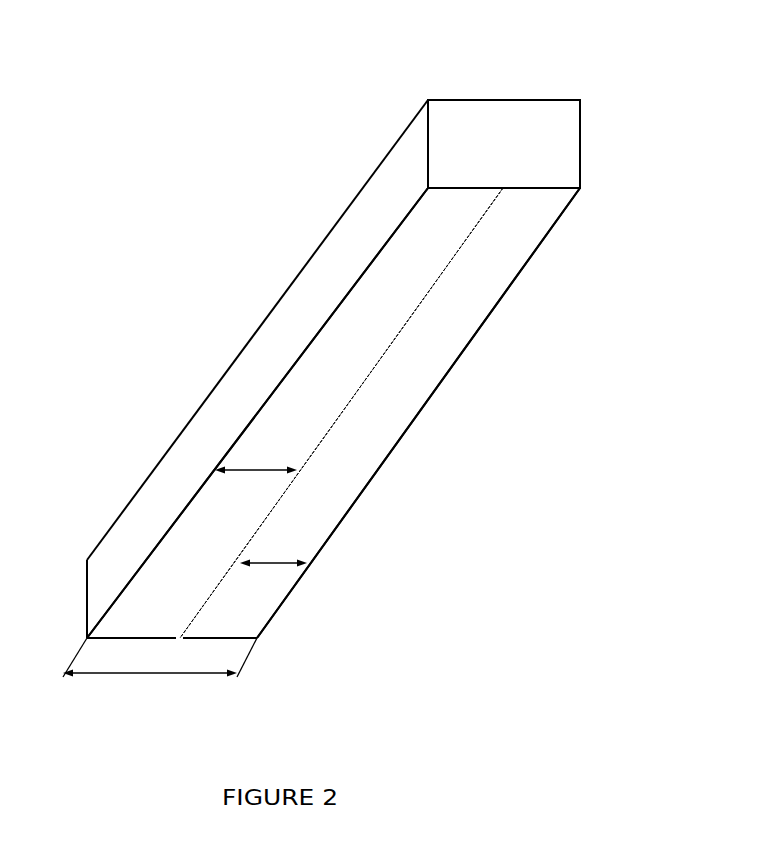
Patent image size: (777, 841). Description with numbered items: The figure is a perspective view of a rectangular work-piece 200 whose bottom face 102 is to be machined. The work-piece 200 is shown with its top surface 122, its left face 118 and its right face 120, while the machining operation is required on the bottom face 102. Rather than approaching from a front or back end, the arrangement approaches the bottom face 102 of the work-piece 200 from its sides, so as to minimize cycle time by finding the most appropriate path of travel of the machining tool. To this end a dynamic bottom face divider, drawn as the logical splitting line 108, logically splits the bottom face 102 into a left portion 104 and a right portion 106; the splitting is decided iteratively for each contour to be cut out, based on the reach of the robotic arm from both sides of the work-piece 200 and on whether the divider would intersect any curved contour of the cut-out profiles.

The rectangular work-piece 200 is at (157, 84).
The bottom face 102 is at (427, 308).
The left portion 104 is at (440, 232).
The right portion 106 is at (532, 223).
The logical splitting line 108 is at (340, 417).
The left face 118 is at (405, 148).
The right face 120 is at (580, 147).
The top surface 122 is at (503, 100).